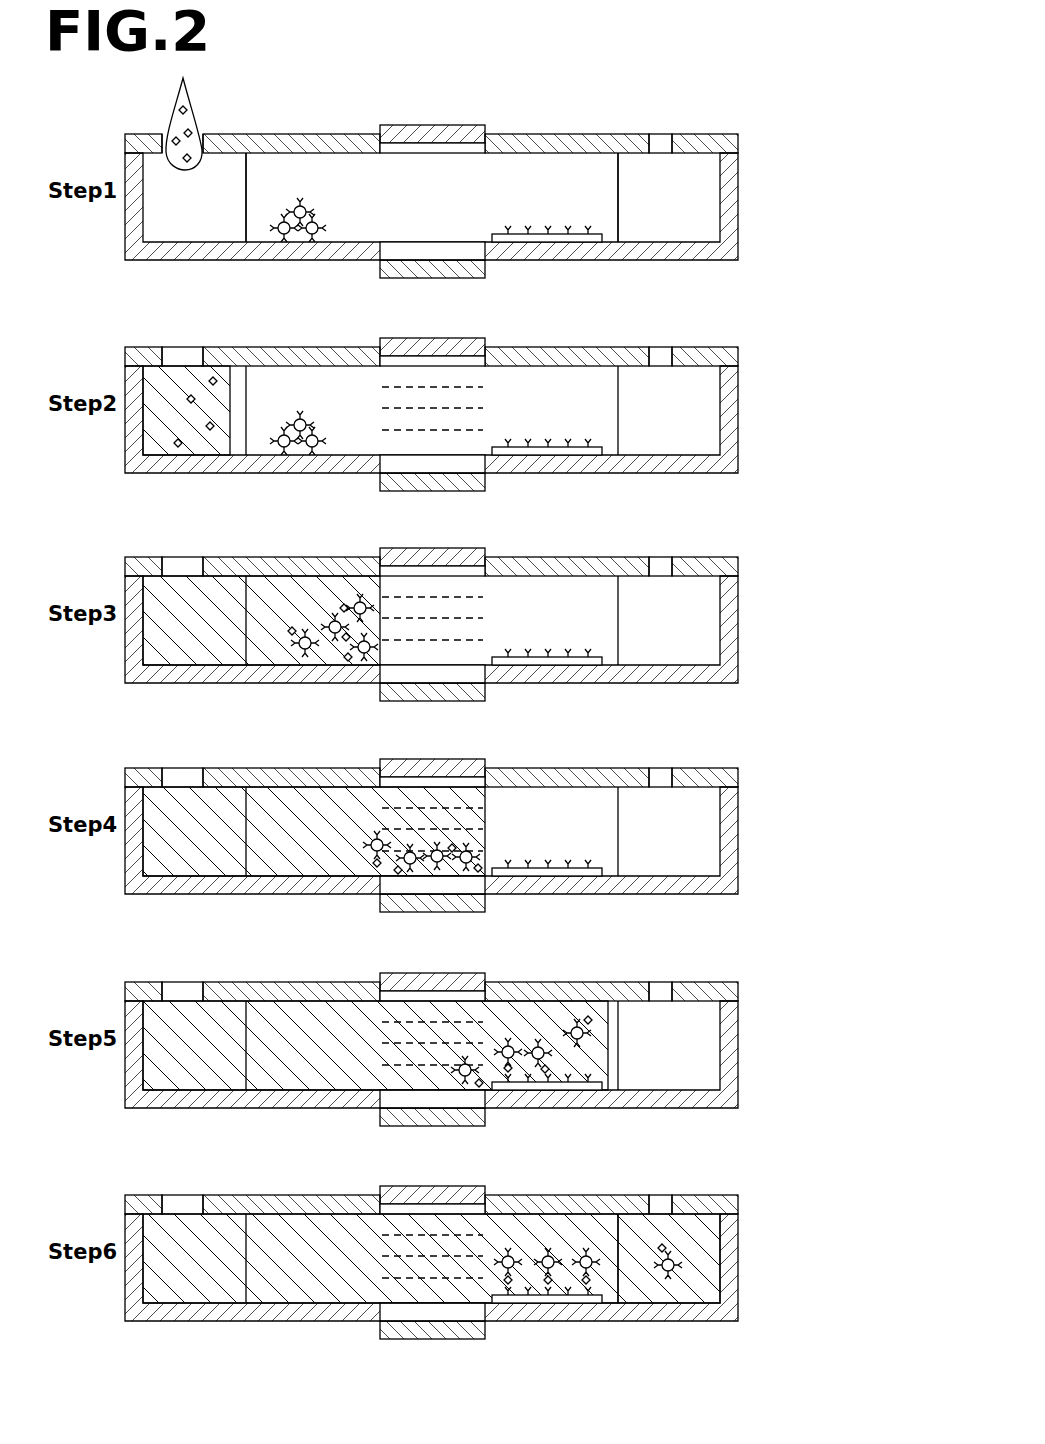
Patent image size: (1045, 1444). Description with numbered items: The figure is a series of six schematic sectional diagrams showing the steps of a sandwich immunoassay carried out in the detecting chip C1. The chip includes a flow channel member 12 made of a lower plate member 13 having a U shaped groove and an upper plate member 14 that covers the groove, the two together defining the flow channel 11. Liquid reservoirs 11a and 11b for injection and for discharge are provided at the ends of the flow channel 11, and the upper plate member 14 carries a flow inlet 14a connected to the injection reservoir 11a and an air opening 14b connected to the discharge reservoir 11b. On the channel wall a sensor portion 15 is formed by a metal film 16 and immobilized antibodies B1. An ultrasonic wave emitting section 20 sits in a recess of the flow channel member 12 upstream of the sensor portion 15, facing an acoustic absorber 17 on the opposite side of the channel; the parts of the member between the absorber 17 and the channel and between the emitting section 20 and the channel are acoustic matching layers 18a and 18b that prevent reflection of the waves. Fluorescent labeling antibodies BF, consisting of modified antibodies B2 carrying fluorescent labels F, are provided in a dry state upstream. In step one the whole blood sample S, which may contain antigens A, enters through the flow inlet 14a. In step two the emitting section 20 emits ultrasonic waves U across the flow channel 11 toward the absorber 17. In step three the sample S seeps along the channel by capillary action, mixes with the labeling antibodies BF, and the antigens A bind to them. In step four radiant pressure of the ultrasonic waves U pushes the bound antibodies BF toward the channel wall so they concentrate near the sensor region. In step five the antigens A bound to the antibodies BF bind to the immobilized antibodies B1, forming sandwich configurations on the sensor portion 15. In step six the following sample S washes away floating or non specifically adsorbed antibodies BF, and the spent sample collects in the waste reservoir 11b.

The detecting chip C1 is at (449, 710).
The flow channel 11 is at (433, 693).
The liquid reservoir for injection 11a is at (177, 233).
The liquid reservoir for discharge 11b is at (688, 162).
The flow channel member 12 is at (483, 716).
The lower plate member 13 is at (463, 752).
The upper plate member 14 is at (463, 647).
The flow inlet 14a is at (166, 136).
The air opening 14b is at (659, 142).
The sensor portion 15 is at (546, 744).
The metal film 16 is at (530, 243).
The acoustic absorber 17 is at (390, 279).
The acoustic matching layer 18a is at (385, 250).
The acoustic matching layer 18b is at (487, 148).
The ultrasonic wave emitting section 20 is at (448, 125).
The whole blood sample S is at (193, 97).
The antigen A is at (192, 132).
The immobilized antibody B1 is at (550, 236).
The modified antibody B2 is at (306, 208).
The fluorescent label F is at (476, 738).
The fluorescent labeling antibody BF is at (469, 725).
The ultrasonic wave U is at (487, 387).